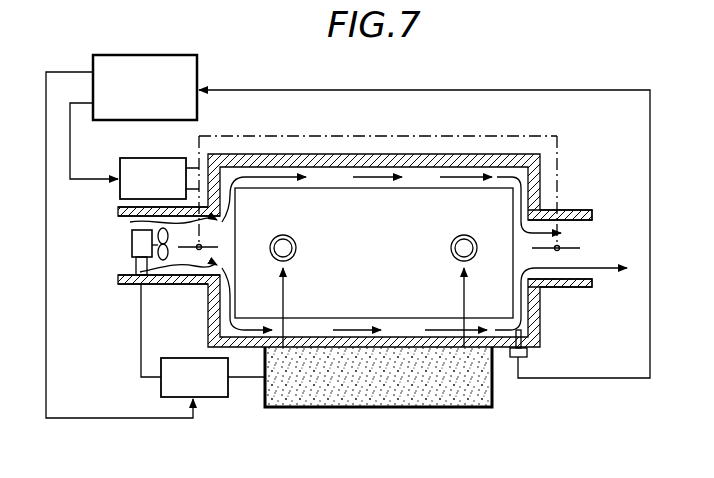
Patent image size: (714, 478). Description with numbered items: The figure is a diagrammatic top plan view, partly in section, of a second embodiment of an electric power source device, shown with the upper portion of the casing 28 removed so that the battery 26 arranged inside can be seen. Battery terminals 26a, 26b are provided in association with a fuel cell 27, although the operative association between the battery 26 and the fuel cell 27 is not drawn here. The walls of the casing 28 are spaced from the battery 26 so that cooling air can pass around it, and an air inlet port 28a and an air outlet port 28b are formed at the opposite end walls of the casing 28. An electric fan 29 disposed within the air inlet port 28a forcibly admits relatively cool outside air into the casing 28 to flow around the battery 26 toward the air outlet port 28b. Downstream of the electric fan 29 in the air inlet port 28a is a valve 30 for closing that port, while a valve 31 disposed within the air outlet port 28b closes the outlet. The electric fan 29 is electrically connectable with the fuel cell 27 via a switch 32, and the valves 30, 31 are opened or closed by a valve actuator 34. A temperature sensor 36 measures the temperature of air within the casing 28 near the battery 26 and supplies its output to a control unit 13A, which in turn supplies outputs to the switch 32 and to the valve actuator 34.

The control unit 13A is at (165, 102).
The battery 26 is at (415, 310).
The battery terminal 26a is at (293, 240).
The battery terminal 26b is at (455, 240).
The fuel cell 27 is at (365, 398).
The casing 28 is at (541, 318).
The air inlet port 28a is at (165, 286).
The air outlet port 28b is at (572, 228).
The electric fan 29 is at (132, 244).
The valve 30 is at (205, 254).
The valve 31 is at (575, 247).
The switch 32 is at (185, 358).
The valve actuator 34 is at (135, 158).
The temperature sensor 36 is at (528, 353).